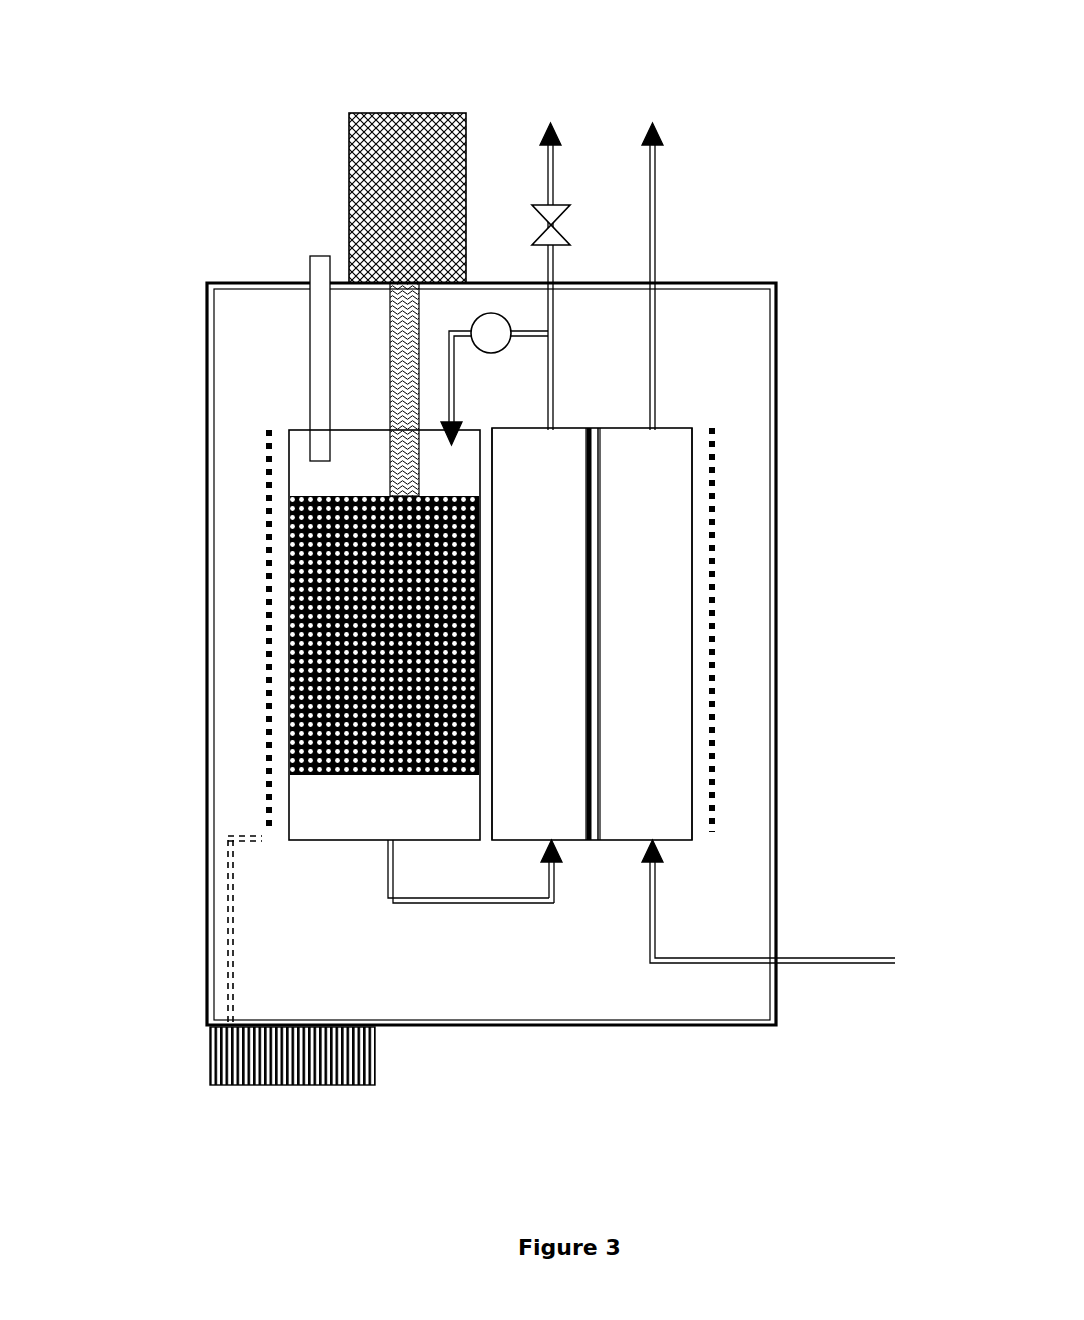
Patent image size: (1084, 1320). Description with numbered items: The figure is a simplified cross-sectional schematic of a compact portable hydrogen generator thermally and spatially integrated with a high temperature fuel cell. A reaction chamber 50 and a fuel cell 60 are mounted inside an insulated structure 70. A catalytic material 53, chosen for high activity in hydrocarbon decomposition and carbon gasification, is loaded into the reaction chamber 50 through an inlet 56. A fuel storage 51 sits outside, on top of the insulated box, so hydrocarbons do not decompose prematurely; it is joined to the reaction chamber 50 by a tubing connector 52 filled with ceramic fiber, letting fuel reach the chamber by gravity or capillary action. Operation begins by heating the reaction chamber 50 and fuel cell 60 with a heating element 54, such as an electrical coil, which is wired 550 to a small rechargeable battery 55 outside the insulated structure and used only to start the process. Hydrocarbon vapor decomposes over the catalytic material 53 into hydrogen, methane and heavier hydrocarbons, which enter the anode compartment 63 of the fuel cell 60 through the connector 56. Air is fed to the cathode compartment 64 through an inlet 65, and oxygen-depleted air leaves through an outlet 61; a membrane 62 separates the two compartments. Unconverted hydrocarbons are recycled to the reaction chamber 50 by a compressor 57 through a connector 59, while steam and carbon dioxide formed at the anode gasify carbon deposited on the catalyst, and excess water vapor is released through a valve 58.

The reaction chamber 50 is at (287, 482).
The fuel storage 51 is at (365, 172).
The tubing connector 52 is at (395, 372).
The catalytic material 53 is at (340, 618).
The heating element 54 is at (267, 690).
The rechargeable battery 55 is at (270, 1057).
The wiring 550 is at (206, 903).
The connector 56 is at (310, 258).
The compressor 57 is at (491, 313).
The valve 58 is at (568, 207).
The connector 59 is at (532, 332).
The fuel cell 60 is at (693, 510).
The outlet 61 is at (655, 200).
The membrane 62 is at (598, 665).
The anode compartment 63 is at (551, 778).
The cathode compartment 64 is at (632, 775).
The inlet 65 is at (835, 960).
The insulated structure 70 is at (750, 277).